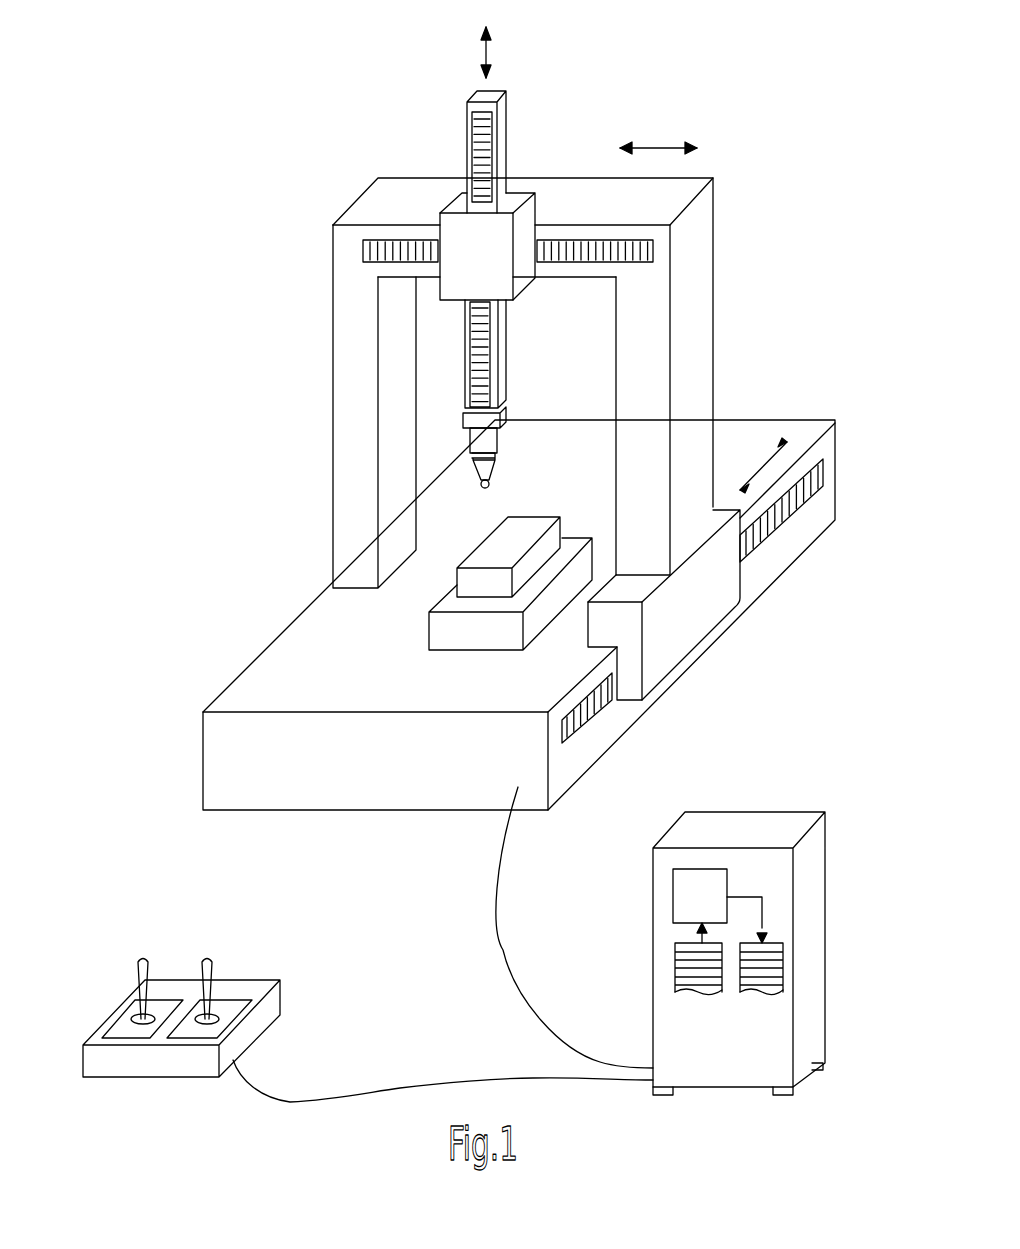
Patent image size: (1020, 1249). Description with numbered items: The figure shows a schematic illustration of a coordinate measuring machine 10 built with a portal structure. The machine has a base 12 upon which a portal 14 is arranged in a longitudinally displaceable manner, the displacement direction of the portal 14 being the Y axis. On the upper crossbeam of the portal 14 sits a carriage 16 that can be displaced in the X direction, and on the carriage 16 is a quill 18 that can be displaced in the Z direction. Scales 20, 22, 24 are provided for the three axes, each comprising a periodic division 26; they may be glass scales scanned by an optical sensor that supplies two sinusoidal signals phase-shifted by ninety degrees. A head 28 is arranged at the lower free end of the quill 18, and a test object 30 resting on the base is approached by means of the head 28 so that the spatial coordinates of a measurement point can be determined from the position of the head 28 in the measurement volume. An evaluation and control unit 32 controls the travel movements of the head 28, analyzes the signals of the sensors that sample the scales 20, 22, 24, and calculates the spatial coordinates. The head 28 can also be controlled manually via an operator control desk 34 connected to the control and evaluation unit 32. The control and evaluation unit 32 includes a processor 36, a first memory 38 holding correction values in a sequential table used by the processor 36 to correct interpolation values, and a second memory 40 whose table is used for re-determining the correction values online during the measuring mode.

The coordinate measuring machine 10 is at (783, 125).
The base 12 is at (248, 686).
The portal 14 is at (345, 338).
The carriage 16 is at (457, 207).
The quill 18 is at (477, 95).
The scale 20 is at (780, 512).
The scale 22 is at (652, 251).
The scale 24 is at (483, 137).
The periodic division 26 is at (362, 250).
The head 28 is at (473, 472).
The test object 30 is at (492, 557).
The evaluation and control unit 32 is at (745, 833).
The operator control desk 34 is at (258, 966).
The processor 36 is at (673, 897).
The first memory 38 is at (675, 970).
The second memory 40 is at (783, 968).